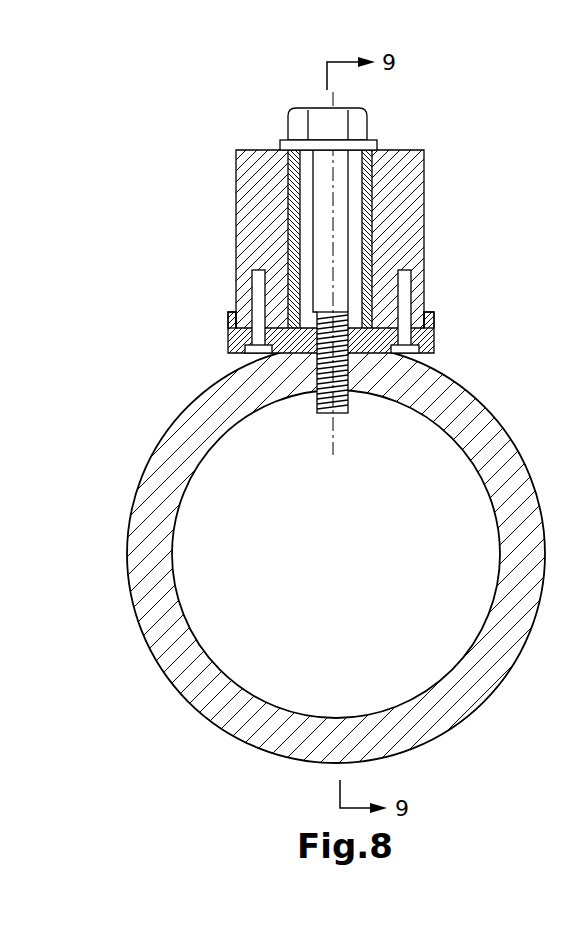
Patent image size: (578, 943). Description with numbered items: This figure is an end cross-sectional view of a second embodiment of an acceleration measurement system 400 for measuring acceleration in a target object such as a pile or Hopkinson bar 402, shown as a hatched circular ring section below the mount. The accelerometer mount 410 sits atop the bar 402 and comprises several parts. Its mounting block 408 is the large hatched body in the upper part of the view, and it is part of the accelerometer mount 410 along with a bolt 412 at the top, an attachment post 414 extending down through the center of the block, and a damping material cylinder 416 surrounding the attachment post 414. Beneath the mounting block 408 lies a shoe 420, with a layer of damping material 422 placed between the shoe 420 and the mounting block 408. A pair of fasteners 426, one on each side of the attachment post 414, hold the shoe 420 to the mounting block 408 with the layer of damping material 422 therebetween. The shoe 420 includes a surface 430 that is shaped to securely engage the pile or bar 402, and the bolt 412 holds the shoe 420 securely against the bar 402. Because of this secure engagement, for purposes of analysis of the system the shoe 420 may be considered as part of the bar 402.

The acceleration measurement system 400 is at (318, 405).
The Hopkinson bar 402 is at (483, 448).
The mounting block 408 is at (405, 160).
The accelerometer mount 410 is at (338, 251).
The bolt 412 is at (359, 121).
The attachment post 414 is at (303, 176).
The damping material cylinder 416 is at (373, 207).
The shoe 420 is at (229, 331).
The layer of damping material 422 is at (237, 312).
The fasteners 426 is at (250, 293).
The surface 430 is at (360, 358).